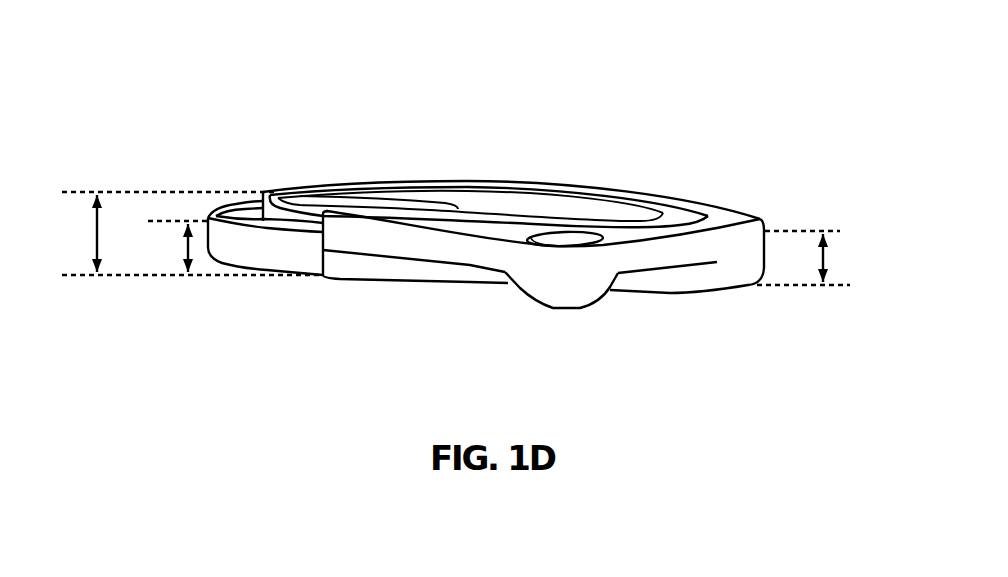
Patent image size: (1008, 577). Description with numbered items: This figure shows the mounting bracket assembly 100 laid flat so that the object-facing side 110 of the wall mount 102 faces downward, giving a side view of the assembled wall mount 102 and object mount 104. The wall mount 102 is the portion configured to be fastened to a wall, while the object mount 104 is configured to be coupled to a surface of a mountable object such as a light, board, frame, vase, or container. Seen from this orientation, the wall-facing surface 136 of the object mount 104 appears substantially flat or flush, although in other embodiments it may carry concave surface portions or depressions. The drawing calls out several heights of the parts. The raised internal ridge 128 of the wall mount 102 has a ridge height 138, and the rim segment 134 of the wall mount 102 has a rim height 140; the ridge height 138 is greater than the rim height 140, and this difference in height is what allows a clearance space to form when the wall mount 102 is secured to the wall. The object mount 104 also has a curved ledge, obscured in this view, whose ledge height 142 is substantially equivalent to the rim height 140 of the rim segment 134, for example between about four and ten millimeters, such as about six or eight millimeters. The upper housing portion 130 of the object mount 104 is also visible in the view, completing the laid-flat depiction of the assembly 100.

The mounting bracket assembly 100 is at (194, 58).
The wall mount 102 is at (208, 206).
The object mount 104 is at (521, 226).
The object-facing side 110 is at (281, 290).
The raised internal ridge 128 is at (263, 192).
The upper housing portion 130 is at (401, 171).
The rim segment 134 is at (261, 180).
The wall-facing surface 136 is at (715, 222).
The ridge height 138 is at (95, 238).
The rim height 140 is at (187, 240).
The ledge height 142 is at (824, 257).